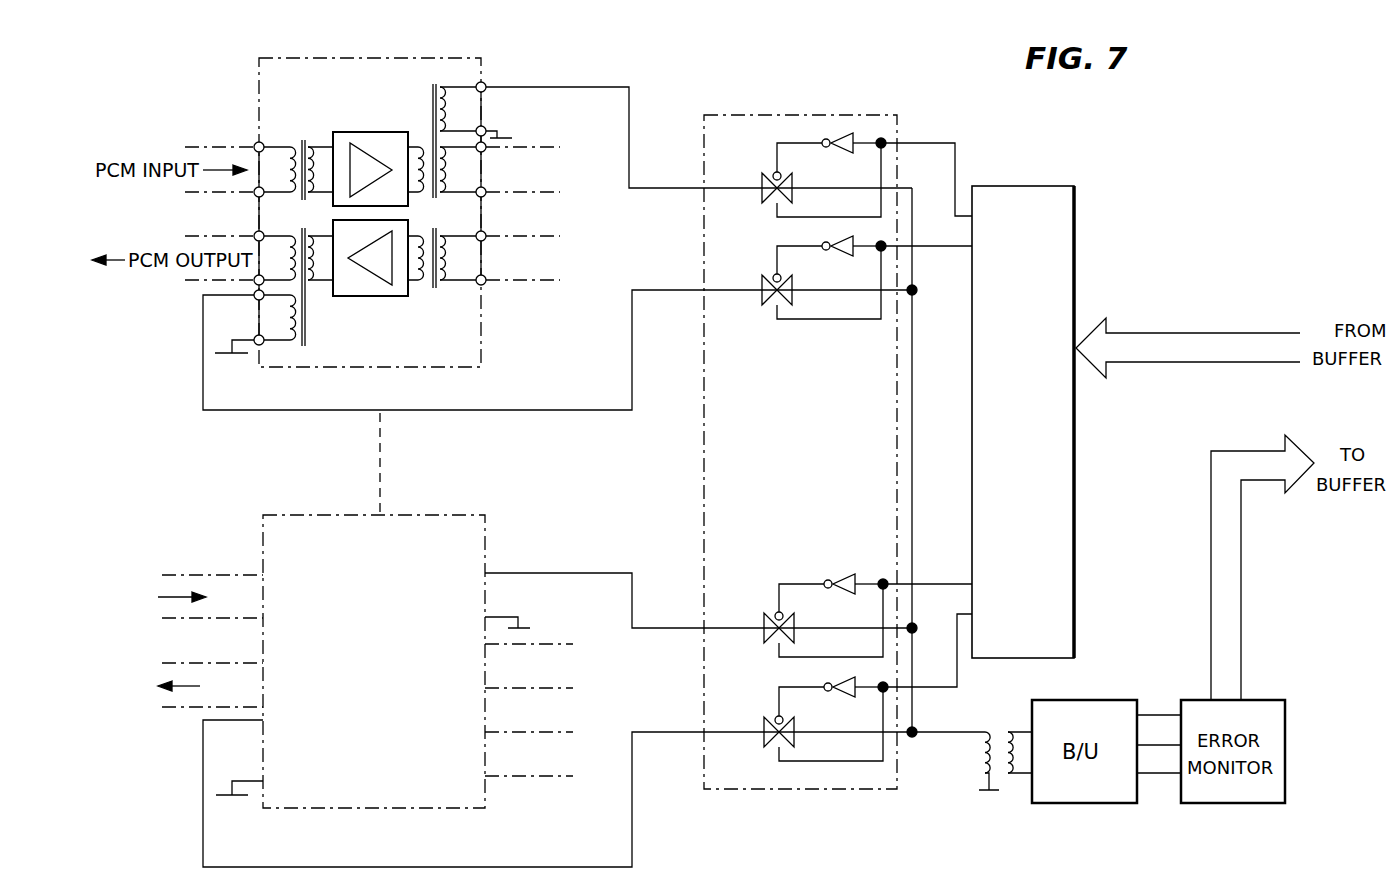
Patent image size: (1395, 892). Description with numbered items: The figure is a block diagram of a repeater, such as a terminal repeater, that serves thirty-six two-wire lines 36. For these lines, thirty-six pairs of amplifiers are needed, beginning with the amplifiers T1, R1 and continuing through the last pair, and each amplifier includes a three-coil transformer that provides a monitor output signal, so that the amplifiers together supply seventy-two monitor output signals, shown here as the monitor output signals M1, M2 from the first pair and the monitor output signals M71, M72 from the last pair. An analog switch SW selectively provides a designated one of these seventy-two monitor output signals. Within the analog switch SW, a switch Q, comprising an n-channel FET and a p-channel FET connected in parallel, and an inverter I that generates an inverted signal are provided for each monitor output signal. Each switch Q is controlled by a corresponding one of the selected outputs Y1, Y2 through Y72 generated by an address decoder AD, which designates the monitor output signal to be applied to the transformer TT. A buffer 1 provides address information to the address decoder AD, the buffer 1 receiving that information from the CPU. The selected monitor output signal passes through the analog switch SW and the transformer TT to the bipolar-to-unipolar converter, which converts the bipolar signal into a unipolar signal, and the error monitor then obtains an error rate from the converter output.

The buffer 1 is at (460, 234).
The 2-wire lines 36 is at (460, 691).
The amplifier T1 is at (362, 132).
The amplifier R1 is at (362, 296).
The monitor output signal M1 is at (624, 125).
The monitor output signal M2 is at (460, 350).
The monitor output signal M71 is at (623, 589).
The monitor output signal M72 is at (460, 793).
The analog switch SW is at (844, 452).
The switch Q is at (768, 196).
The inverter I is at (842, 151).
The address decoder AD is at (972, 396).
The selected output Y1 is at (940, 184).
The selected output Y2 is at (940, 247).
The selected output Y72 is at (947, 585).
The transformer TT is at (982, 760).